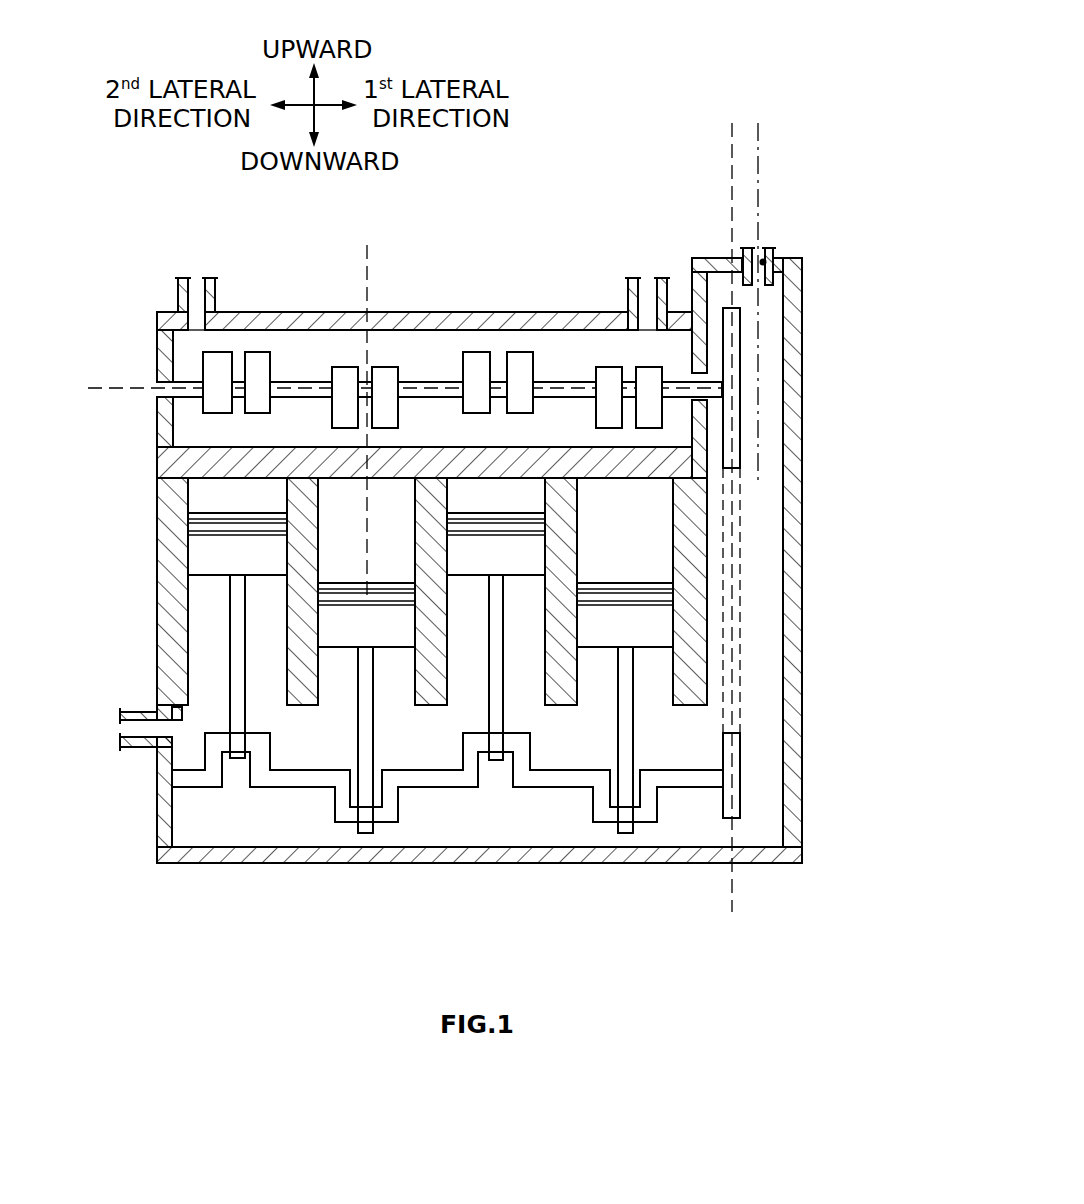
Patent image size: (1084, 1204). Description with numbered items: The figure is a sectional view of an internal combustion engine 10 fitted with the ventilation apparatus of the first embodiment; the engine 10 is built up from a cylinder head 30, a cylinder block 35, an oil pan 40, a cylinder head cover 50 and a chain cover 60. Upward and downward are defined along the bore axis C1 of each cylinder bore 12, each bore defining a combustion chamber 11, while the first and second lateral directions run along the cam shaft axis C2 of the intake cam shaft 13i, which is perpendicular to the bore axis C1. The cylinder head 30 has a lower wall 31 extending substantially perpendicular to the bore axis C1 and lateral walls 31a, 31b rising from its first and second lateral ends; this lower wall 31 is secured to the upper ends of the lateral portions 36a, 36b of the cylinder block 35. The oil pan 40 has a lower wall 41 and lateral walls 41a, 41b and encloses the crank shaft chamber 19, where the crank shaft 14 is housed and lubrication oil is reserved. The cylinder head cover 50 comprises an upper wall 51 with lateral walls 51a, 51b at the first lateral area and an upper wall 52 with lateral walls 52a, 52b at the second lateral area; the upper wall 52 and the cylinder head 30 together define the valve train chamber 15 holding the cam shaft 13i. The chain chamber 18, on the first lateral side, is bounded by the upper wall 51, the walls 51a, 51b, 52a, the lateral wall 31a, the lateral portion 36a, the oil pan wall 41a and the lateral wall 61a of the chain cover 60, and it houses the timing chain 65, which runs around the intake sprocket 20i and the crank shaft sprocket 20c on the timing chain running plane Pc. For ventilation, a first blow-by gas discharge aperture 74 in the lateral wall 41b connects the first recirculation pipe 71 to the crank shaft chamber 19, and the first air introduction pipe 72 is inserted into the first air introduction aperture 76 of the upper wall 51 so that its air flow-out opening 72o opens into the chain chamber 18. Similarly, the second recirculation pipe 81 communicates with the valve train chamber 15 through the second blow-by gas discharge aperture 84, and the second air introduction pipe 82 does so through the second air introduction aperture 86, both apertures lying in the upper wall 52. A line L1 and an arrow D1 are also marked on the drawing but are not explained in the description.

The engine 10 is at (487, 230).
The combustion chamber 11 is at (251, 507).
The cylinder bore 12 is at (404, 534).
The intake cam shaft 13i is at (303, 382).
The crank shaft 14 is at (300, 785).
The valve train chamber 15 is at (446, 377).
The chain chamber 18 is at (771, 612).
The crank shaft chamber 19 is at (447, 783).
The intake sprocket 20i is at (737, 443).
The crank shaft sprocket 20c is at (740, 773).
The cylinder head 30 is at (466, 614).
The lower wall 31 is at (466, 436).
The lateral wall 31a is at (708, 407).
The lateral wall 31b is at (160, 412).
The cylinder block 35 is at (160, 553).
The lateral portion 36a is at (697, 657).
The lateral portion 36b is at (165, 488).
The oil pan 40 is at (478, 769).
The lower wall 41 is at (478, 810).
The lateral wall 41a is at (795, 820).
The lateral wall 41b is at (163, 835).
The cylinder head cover 50 is at (485, 312).
The upper wall 51 is at (787, 285).
The lateral wall 51a is at (790, 375).
The lateral wall 51b is at (757, 283).
The upper wall 52 is at (396, 332).
The lateral wall 52a is at (679, 300).
The lateral wall 52b is at (168, 333).
The chain cover 60 is at (800, 552).
The lateral wall 61a is at (797, 610).
The timing chain 65 is at (738, 530).
The first blow-by gas recirculation pipe 71 is at (120, 712).
The first air introduction pipe 72 is at (795, 262).
The air flow-out opening 72o is at (713, 297).
The first blow-by gas discharge aperture 74 is at (178, 705).
The first air introduction aperture 76 is at (766, 262).
The second blow-by gas recirculation pipe 81 is at (215, 290).
The second air introduction pipe 82 is at (634, 277).
The second blow-by gas discharge aperture 84 is at (195, 330).
The second air introduction aperture 86 is at (636, 333).
The bore axis C1 is at (370, 262).
The cam shaft axis C2 is at (105, 388).
The timing chain running plane Pc is at (730, 143).
The reference line L1 is at (760, 143).
The direction D1 is at (945, 290).